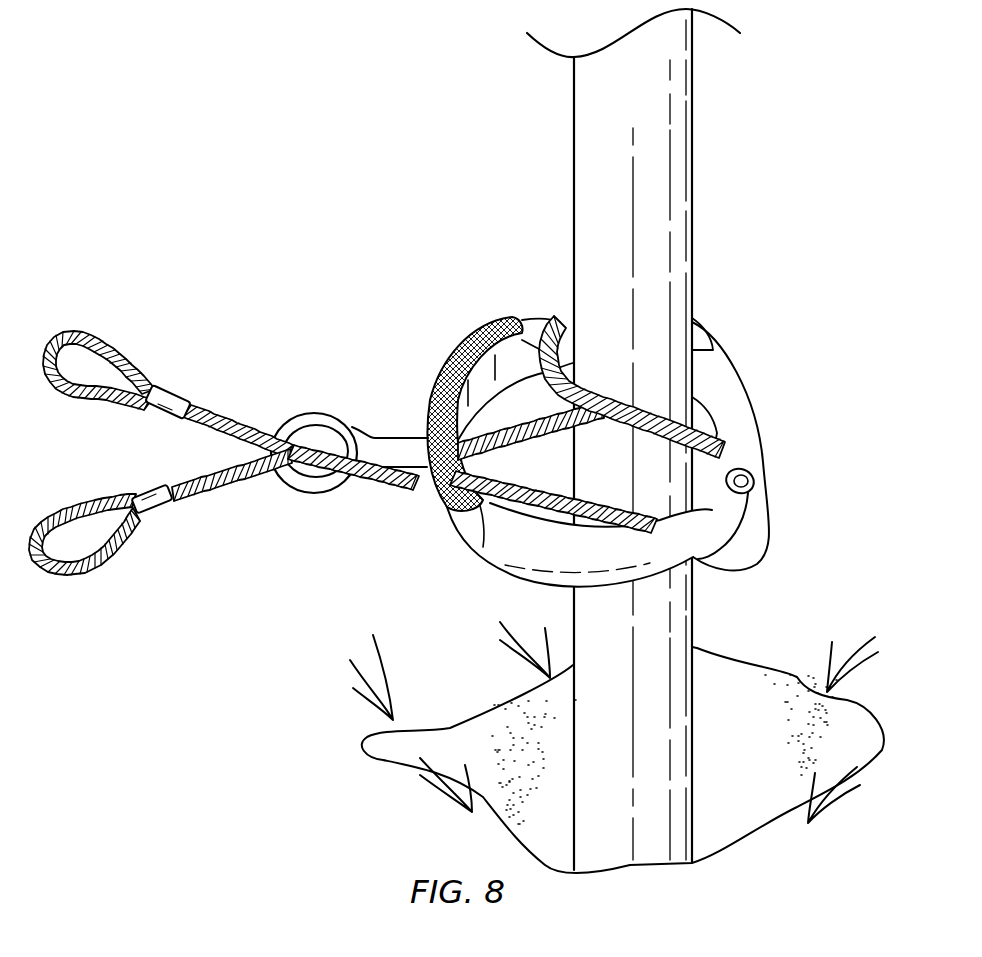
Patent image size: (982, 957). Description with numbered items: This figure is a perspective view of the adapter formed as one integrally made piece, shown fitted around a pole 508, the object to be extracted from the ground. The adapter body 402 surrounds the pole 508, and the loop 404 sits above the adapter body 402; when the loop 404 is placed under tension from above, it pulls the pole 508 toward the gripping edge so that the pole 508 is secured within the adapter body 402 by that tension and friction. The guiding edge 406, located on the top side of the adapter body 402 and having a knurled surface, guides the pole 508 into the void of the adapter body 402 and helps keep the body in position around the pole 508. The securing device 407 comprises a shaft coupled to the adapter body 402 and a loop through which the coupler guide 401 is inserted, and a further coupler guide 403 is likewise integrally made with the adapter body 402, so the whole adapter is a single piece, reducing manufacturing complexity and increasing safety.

The coupler guide 401 is at (203, 495).
The adapter body 402 is at (758, 419).
The coupler guide 403 is at (768, 514).
The loop 404 is at (558, 381).
The guiding edge 406 is at (440, 372).
The securing device 407 is at (307, 412).
The pole 508 is at (595, 172).